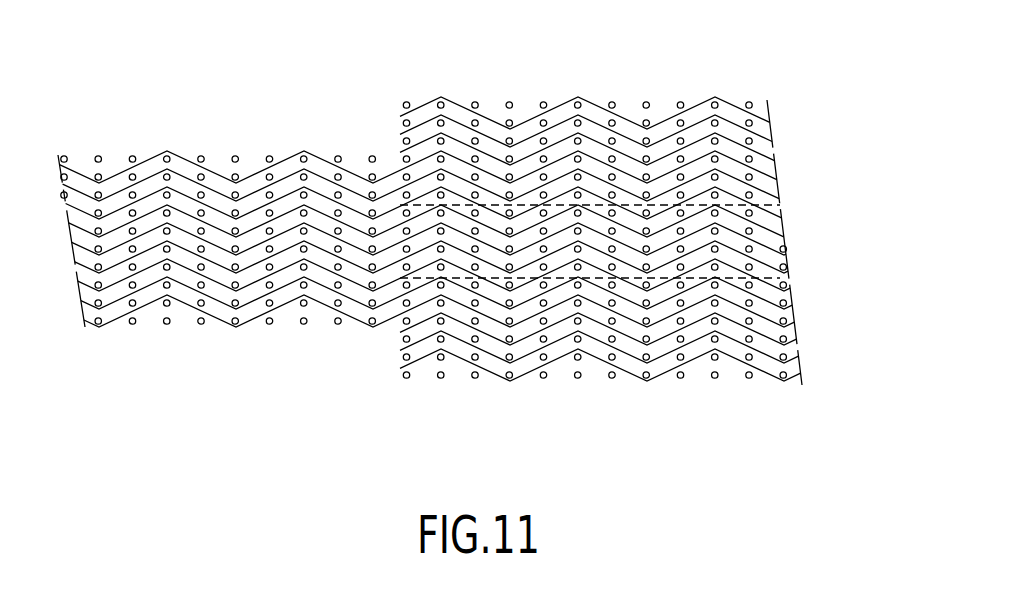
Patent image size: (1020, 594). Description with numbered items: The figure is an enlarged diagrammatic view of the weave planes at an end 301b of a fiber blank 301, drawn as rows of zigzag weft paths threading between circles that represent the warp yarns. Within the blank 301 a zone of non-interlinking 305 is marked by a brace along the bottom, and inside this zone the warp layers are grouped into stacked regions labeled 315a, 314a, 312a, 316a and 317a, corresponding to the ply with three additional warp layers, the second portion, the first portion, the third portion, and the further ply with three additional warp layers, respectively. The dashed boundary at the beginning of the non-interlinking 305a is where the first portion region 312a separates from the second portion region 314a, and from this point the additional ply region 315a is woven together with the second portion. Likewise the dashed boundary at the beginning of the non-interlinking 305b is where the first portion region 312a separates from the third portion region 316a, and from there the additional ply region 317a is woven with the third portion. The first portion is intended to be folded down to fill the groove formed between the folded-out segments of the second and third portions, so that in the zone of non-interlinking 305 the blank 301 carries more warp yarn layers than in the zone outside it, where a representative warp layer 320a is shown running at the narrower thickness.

The fiber blank 301 is at (333, 395).
The end of the fiber blank 301b is at (745, 72).
The corrugation ridge 320a is at (223, 200).
The zone of non-interlinking 305 is at (633, 275).
The beginning of the non-interlinking 305a is at (698, 205).
The beginning of the non-interlinking 305b is at (405, 443).
The upper outer sub-region 315a is at (803, 100).
The upper inner sub-region 314a is at (803, 155).
The central sub-region 312a is at (735, 245).
The lower inner sub-region 316a is at (803, 280).
The lower outer sub-region 317a is at (803, 333).